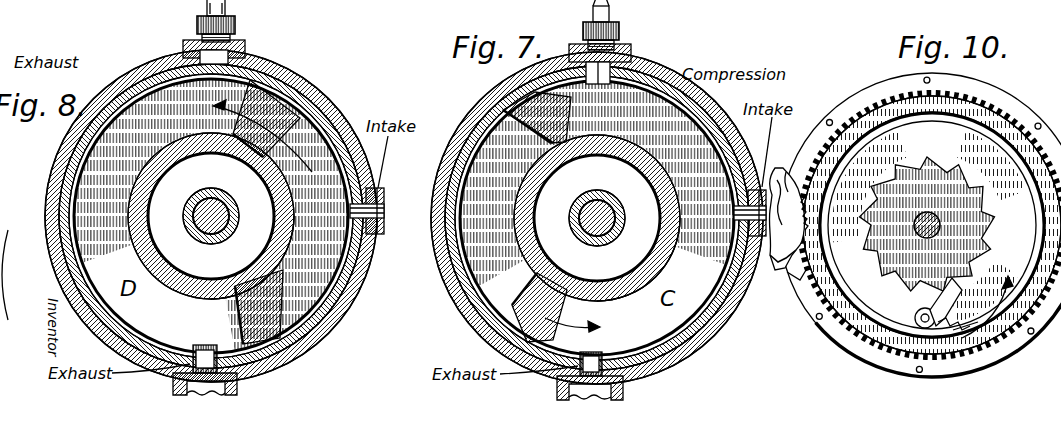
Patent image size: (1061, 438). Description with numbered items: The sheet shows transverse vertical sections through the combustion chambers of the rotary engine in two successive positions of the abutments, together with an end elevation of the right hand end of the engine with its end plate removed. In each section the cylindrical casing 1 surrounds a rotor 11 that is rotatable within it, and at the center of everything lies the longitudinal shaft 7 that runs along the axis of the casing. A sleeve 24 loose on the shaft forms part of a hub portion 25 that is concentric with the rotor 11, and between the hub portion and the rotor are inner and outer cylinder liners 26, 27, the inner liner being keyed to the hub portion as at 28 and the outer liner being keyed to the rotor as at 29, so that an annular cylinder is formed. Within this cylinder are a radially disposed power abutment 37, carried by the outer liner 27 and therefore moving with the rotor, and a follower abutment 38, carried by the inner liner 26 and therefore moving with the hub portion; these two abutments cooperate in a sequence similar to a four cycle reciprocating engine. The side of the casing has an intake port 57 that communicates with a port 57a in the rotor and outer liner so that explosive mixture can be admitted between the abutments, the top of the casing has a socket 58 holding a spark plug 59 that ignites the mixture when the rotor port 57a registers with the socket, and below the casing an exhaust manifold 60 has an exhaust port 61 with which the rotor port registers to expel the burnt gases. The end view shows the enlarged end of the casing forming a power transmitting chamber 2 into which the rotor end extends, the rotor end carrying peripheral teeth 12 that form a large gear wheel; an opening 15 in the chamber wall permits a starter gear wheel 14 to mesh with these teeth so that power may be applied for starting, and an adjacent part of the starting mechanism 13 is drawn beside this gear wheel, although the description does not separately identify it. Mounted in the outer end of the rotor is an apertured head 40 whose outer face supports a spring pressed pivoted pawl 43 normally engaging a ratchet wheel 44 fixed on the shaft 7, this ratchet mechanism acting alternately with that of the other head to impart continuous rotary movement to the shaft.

In FIG. 8, the cylindrical casing 1 is at (119, 108).
In FIG. 7, the cylindrical casing 1 is at (597, 218).
In FIG. 10, the power transmitting chamber 2 is at (857, 360).
In FIG. 8, the longitudinal shaft 7 is at (226, 216).
In FIG. 7, the longitudinal shaft 7 is at (611, 218).
In FIG. 10, the longitudinal shaft 7 is at (917, 213).
In FIG. 8, the cylindrical rotor 11 is at (211, 216).
In FIG. 7, the cylindrical rotor 11 is at (597, 209).
In FIG. 10, the peripheral teeth 12 is at (872, 102).
In FIG. 10, the pinion 13 is at (783, 173).
In FIG. 10, the gear wheel 14 is at (778, 262).
In FIG. 10, the opening 15 is at (800, 293).
In FIG. 8, the sleeve 24 is at (198, 216).
In FIG. 7, the sleeve 24 is at (584, 218).
In FIG. 8, the hub portion 25 is at (211, 216).
In FIG. 7, the hub portion 25 is at (597, 218).
In FIG. 8, the inner cylinder liner 26 is at (262, 257).
In FIG. 7, the inner cylinder liner 26 is at (646, 259).
In FIG. 8, the outer cylinder liner 27 is at (211, 216).
In FIG. 7, the outer cylinder liner 27 is at (597, 218).
In FIG. 8, the key 28 is at (211, 216).
In FIG. 7, the key 28 is at (597, 218).
In FIG. 8, the key 29 is at (97, 133).
In FIG. 7, the key 29 is at (582, 218).
In FIG. 8, the power abutment 37 is at (246, 314).
In FIG. 7, the power abutment 37 is at (500, 124).
In FIG. 8, the follower abutment 38 is at (333, 100).
In FIG. 7, the follower abutment 38 is at (568, 310).
In FIG. 10, the apertured head 40 is at (952, 148).
In FIG. 10, the spring pressed pivoted pawl 43 is at (932, 300).
In FIG. 10, the ratchet wheel 44 is at (940, 195).
In FIG. 8, the intake port 57 is at (386, 222).
In FIG. 7, the intake port 57 is at (762, 240).
In FIG. 8, the rotor port 57a is at (200, 348).
In FIG. 7, the rotor port 57a is at (633, 62).
In FIG. 8, the socket 58 is at (245, 44).
In FIG. 7, the socket 58 is at (631, 54).
In FIG. 8, the spark plug 59 is at (234, 22).
In FIG. 7, the spark plug 59 is at (583, 32).
In FIG. 8, the exhaust manifold 60 is at (240, 386).
In FIG. 7, the exhaust manifold 60 is at (622, 390).
In FIG. 8, the exhaust port 61 is at (196, 6).
In FIG. 7, the exhaust port 61 is at (532, 395).